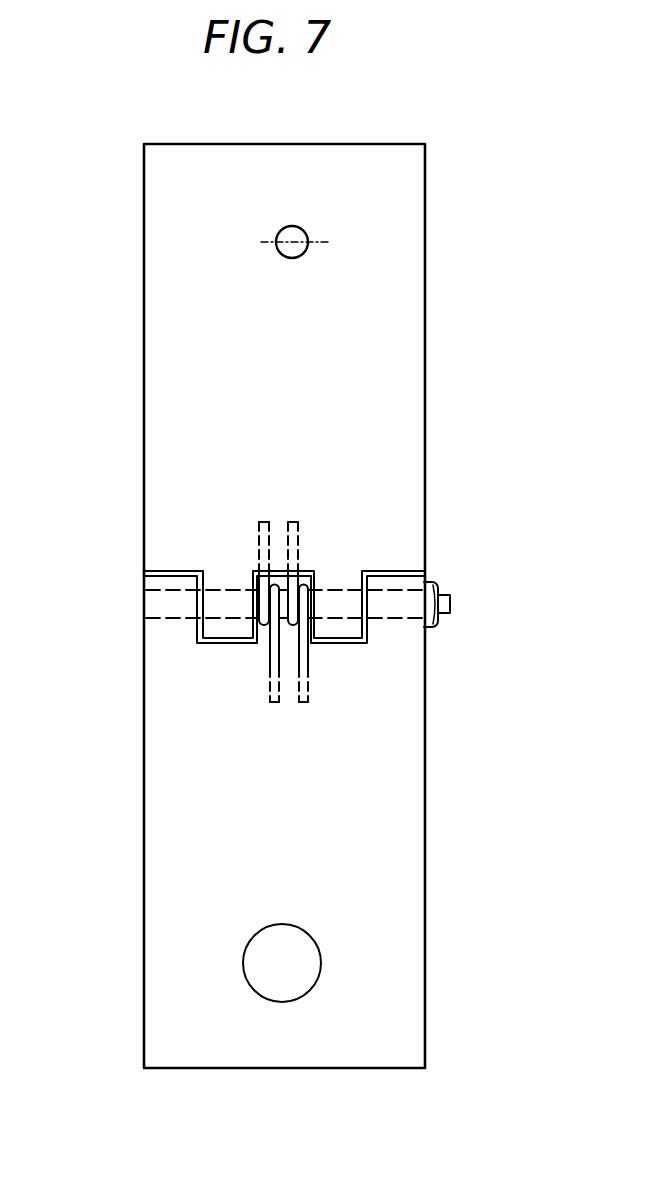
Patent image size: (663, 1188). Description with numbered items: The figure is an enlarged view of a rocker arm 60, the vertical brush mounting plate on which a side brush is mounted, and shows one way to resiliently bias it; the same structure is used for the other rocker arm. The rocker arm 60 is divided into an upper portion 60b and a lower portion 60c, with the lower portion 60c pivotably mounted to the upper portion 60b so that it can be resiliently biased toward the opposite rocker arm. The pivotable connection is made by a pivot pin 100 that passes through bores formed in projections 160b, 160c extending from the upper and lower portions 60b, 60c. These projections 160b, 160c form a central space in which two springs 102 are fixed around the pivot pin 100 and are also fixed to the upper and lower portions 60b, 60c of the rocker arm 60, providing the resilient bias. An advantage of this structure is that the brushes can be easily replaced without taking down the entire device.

The rocker arm 60 is at (450, 512).
The upper portion 60b is at (425, 302).
The lower portion 60c is at (425, 790).
The pivot pin 100 is at (143, 574).
The springs 102 is at (307, 705).
The projections 160b is at (230, 632).
The projections 160c is at (143, 572).